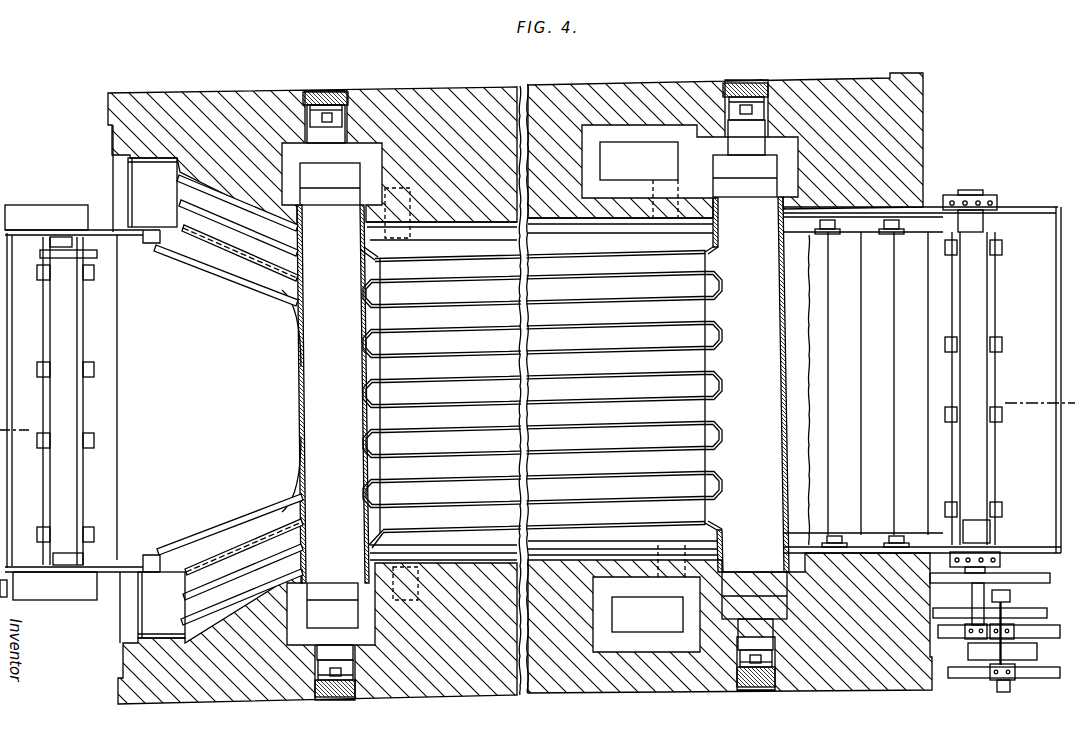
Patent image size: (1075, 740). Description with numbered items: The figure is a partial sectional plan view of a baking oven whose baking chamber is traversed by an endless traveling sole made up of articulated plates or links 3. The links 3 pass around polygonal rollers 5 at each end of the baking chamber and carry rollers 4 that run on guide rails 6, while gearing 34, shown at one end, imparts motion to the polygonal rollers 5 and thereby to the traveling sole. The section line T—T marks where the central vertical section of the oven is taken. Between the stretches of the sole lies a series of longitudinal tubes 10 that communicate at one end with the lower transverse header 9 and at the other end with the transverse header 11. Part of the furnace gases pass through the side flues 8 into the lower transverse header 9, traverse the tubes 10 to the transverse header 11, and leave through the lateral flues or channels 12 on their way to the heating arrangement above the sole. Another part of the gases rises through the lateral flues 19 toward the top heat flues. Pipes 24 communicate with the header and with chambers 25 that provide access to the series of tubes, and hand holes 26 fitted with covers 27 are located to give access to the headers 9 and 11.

The articulated plates or links 3 is at (878, 383).
The rollers 4 is at (830, 233).
The polygonal rollers 5 is at (73, 487).
The guide rails 6 is at (143, 238).
The side flues 8 is at (750, 385).
The lower transverse header 9 is at (747, 384).
The tubes 10 is at (542, 392).
The transverse header 11 is at (332, 394).
The lateral flues or channels 12 is at (330, 382).
The lateral flues 19 is at (642, 387).
The pipes 24 is at (245, 283).
The chambers 25 is at (156, 398).
The hand holes 26 is at (334, 121).
The covers 27 is at (335, 97).
The gearing 34 is at (1000, 583).
The section line T— T is at (1040, 393).